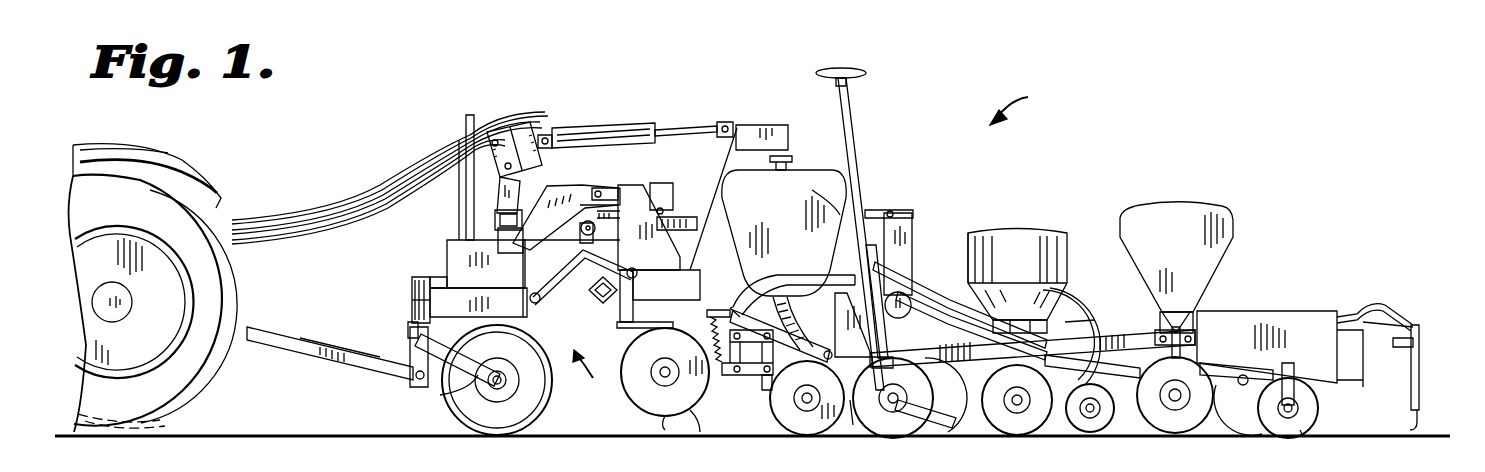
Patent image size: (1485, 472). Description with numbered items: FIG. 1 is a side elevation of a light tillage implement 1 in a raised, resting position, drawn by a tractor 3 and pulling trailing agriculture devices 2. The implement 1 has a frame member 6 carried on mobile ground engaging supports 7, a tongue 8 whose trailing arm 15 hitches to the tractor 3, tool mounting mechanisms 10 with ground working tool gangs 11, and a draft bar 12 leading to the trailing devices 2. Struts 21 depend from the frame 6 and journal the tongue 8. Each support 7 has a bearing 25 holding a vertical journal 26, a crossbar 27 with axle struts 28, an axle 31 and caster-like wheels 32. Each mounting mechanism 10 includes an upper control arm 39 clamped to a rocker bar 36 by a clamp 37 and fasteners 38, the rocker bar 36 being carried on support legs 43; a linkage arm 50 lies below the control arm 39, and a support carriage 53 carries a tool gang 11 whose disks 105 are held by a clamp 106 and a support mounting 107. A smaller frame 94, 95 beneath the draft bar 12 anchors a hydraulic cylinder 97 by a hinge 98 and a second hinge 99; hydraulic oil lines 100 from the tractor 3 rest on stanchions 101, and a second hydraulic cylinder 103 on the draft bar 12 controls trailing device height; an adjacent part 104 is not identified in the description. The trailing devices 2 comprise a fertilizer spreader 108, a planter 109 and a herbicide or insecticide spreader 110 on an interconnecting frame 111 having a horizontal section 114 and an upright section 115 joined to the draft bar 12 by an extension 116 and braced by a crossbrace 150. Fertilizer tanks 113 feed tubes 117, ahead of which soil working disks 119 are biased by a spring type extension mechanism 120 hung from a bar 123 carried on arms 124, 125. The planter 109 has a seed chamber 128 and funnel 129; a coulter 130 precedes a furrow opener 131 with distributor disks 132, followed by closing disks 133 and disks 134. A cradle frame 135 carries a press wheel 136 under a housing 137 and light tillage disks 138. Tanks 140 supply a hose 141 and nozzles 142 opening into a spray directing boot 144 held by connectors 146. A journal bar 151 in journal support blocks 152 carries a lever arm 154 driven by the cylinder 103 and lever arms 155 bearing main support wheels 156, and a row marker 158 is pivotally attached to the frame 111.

The light tillage implement 1 is at (588, 373).
The trailing agriculture devices 2 is at (1020, 104).
The tractor 3 is at (172, 158).
The frame member 6 is at (418, 288).
The mobile ground engaging supports 7 is at (476, 383).
The tongue 8 is at (358, 366).
The tool mounting mechanisms 10 is at (645, 185).
The ground working tool gangs 11 is at (655, 432).
The draft bar 12 is at (530, 272).
The trailing arm 15 is at (310, 360).
The vertically extending struts 21 is at (416, 378).
The bearing 25 is at (414, 304).
The journal 26 is at (438, 278).
The crossbar 27 is at (409, 328).
The axle strut 28 is at (470, 398).
The axle 31 is at (515, 356).
The wheels 32 is at (512, 436).
The rocker bar 36 is at (494, 212).
The clamp 37 is at (500, 222).
The fasteners 38 is at (550, 248).
The control arm 39 is at (585, 195).
The support legs 43 is at (450, 248).
The linkage arm 50 is at (545, 272).
The support carriage 53 is at (672, 208).
The second smaller frame 94 is at (790, 156).
The smaller frame 95 is at (783, 123).
The hydraulic cylinder 97 is at (622, 124).
The hinge 98 is at (727, 120).
The second hinge 99 is at (493, 128).
The hydraulic oil lines 100 is at (552, 130).
The stanchions 101 is at (463, 128).
The second hydraulic cylinder 103 is at (712, 222).
The link arm 104 is at (530, 185).
The ground working disks 105 is at (675, 430).
The clamp 106 is at (604, 304).
The support mounting 107 is at (640, 318).
The fertilizer spreader 108 is at (838, 180).
The planter 109 is at (1017, 240).
The herbicide and/or insecticide spreader 110 is at (1200, 270).
The interconnecting frame 111 is at (845, 432).
The fertilizer holding tanks 113 is at (852, 156).
The horizontal section 114 is at (945, 425).
The upright section 115 is at (850, 328).
The extension 116 is at (878, 212).
The tubes 117 is at (796, 315).
The soil working disks 119 is at (800, 434).
The spring type extension mechanism 120 is at (725, 372).
The bar 123 is at (700, 345).
The rearwardly extending arm 124 is at (812, 258).
The rearwardly extending arm 125 is at (773, 383).
The seed containing chamber 128 is at (970, 235).
The funnel 129 is at (1070, 312).
The coulter 130 is at (888, 437).
The seed furrow opener 131 is at (938, 432).
The distributor disks 132 is at (1010, 436).
The closing disks 133 is at (1092, 436).
The disks 134 is at (1165, 436).
The cradle frame 135 is at (1250, 362).
The press wheel 136 is at (1248, 436).
The housing 137 is at (1240, 318).
The light tillage disks 138 is at (1305, 436).
The holding tanks 140 is at (1185, 215).
The hose 141 is at (1345, 305).
The nozzles 142 is at (1419, 340).
The spray directing boot 144 is at (1418, 425).
The connectors 146 is at (1348, 380).
The crossbrace 150 is at (910, 278).
The journal bar 151 is at (912, 262).
The journal support blocks 152 is at (887, 350).
The lever arm 154 is at (913, 215).
The lever arms 155 is at (915, 300).
The main support wheel 156 is at (1085, 320).
The row marker 158 is at (848, 68).